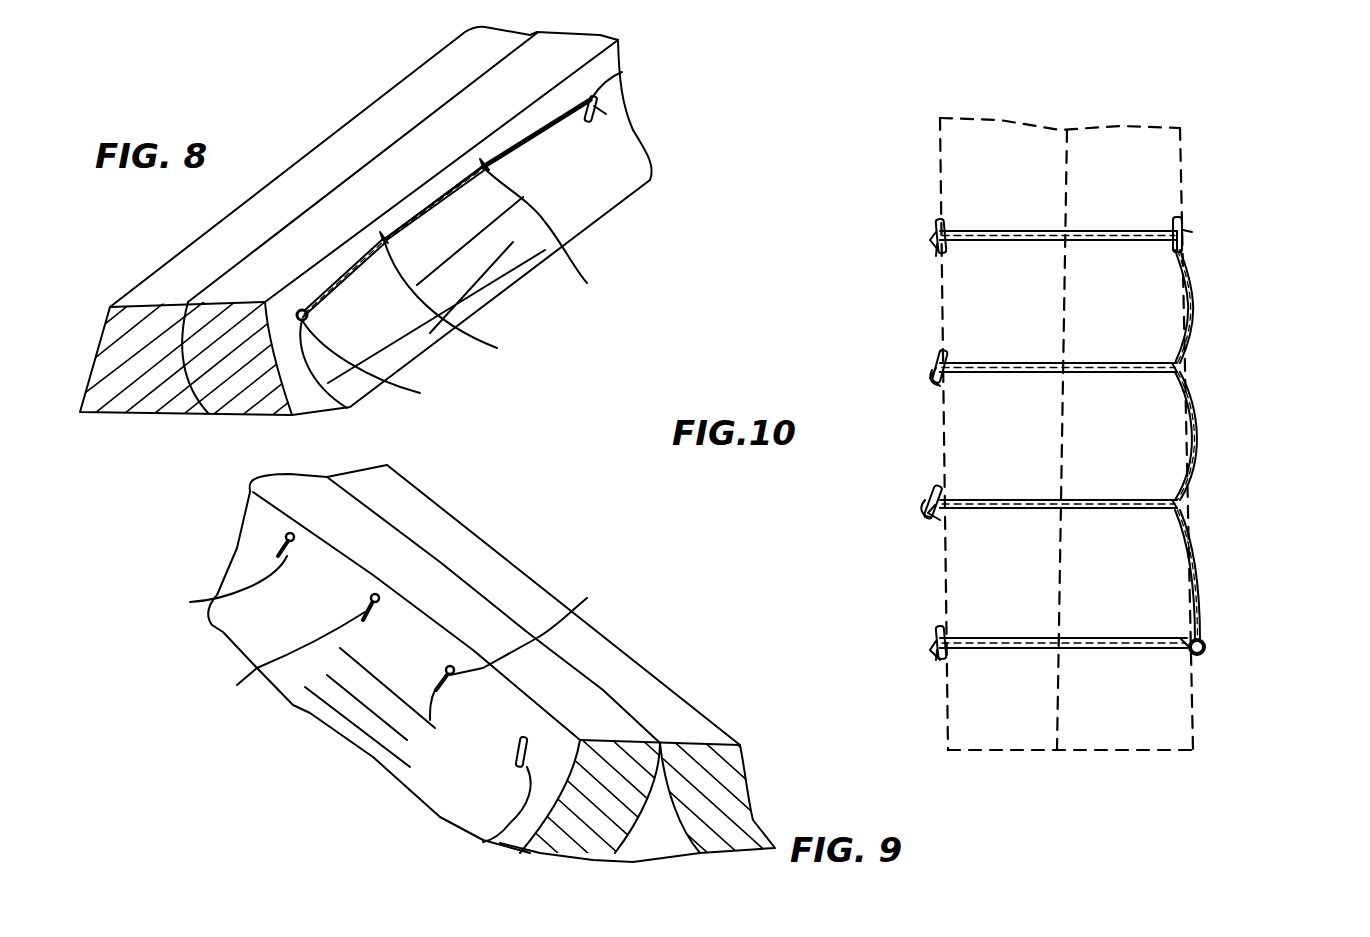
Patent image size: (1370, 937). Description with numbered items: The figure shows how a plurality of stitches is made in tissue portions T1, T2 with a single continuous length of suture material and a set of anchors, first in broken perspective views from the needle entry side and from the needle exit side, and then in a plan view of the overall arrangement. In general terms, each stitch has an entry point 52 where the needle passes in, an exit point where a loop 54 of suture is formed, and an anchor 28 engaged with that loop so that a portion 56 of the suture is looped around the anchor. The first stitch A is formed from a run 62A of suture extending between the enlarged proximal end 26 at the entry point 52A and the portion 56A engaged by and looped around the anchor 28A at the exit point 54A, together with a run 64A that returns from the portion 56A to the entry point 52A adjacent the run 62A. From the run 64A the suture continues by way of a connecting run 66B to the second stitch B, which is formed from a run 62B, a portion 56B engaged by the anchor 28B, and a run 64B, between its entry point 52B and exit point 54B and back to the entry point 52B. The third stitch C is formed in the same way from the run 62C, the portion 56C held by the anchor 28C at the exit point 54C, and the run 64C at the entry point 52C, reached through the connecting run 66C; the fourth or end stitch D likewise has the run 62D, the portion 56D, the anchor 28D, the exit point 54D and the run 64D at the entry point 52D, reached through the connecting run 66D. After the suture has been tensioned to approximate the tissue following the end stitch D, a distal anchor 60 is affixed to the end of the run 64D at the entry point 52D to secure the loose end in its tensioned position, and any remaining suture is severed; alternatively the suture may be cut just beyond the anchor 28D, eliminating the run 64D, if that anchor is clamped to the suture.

In FIG. 8, the enlarged proximal end 26 is at (392, 291).
In FIG. 10, the enlarged proximal end 26 is at (1206, 647).
In FIG. 9, the anchor 28 is at (483, 842).
In FIG. 8, the entry point 52 is at (622, 72).
In FIG. 9, the loop 54 is at (278, 552).
In FIG. 9, the portion 56 is at (275, 535).
In FIG. 8, the distal anchor 60 is at (598, 100).
In FIG. 10, the distal anchor 60 is at (1182, 221).
In FIG. 10, the anchor 28A is at (937, 637).
In FIG. 10, the anchor 28B is at (922, 490).
In FIG. 10, the anchor 28C is at (932, 373).
In FIG. 10, the anchor 28D is at (933, 243).
In FIG. 10, the entry point 52A is at (1192, 660).
In FIG. 10, the entry point 52B is at (1178, 503).
In FIG. 10, the entry point 52C is at (1180, 368).
In FIG. 10, the entry point 52D is at (1184, 238).
In FIG. 10, the exit point 54A is at (943, 657).
In FIG. 10, the exit point 54B is at (943, 517).
In FIG. 10, the exit point 54C is at (947, 383).
In FIG. 10, the exit point 54D is at (950, 224).
In FIG. 10, the portion 56A is at (942, 638).
In FIG. 10, the portion 56B is at (940, 482).
In FIG. 10, the portion 56C is at (940, 362).
In FIG. 10, the portion 56D is at (935, 223).
In FIG. 10, the run 62A is at (1003, 650).
In FIG. 10, the run 62B is at (1153, 510).
In FIG. 10, the run 62C is at (1035, 373).
In FIG. 10, the run 62D is at (1047, 243).
In FIG. 10, the run 64A is at (1138, 641).
In FIG. 10, the run 64B is at (1148, 493).
In FIG. 10, the run 64C is at (1042, 363).
In FIG. 10, the run 64D is at (1047, 228).
In FIG. 10, the connecting run 66B is at (1200, 540).
In FIG. 10, the connecting run 66C is at (1194, 400).
In FIG. 10, the connecting run 66D is at (1191, 270).
In FIG. 10, the first stitch A is at (1137, 653).
In FIG. 10, the second stitch B is at (1143, 496).
In FIG. 10, the third stitch C is at (1133, 360).
In FIG. 10, the end stitch D is at (1108, 231).
In FIG. 8, the first thickness / layer T1 is at (625, 192).
In FIG. 9, the first thickness / layer T1 is at (720, 727).
In FIG. 10, the first thickness / layer T1 is at (1112, 735).
In FIG. 8, the second thickness / layer T2 is at (405, 88).
In FIG. 9, the second thickness / layer T2 is at (453, 810).
In FIG. 10, the second thickness / layer T2 is at (1007, 735).